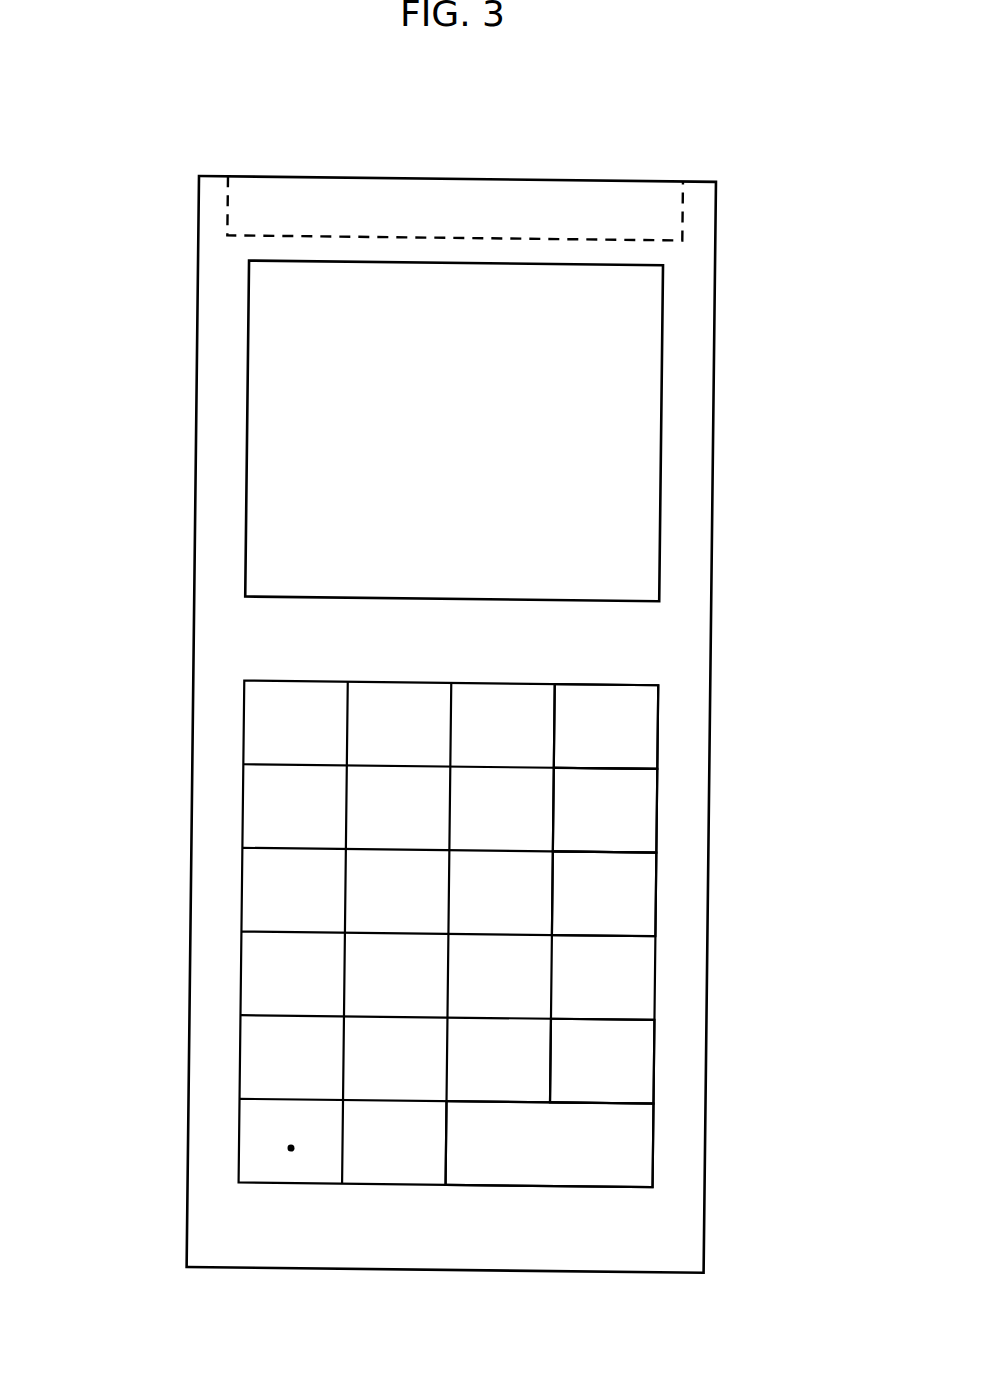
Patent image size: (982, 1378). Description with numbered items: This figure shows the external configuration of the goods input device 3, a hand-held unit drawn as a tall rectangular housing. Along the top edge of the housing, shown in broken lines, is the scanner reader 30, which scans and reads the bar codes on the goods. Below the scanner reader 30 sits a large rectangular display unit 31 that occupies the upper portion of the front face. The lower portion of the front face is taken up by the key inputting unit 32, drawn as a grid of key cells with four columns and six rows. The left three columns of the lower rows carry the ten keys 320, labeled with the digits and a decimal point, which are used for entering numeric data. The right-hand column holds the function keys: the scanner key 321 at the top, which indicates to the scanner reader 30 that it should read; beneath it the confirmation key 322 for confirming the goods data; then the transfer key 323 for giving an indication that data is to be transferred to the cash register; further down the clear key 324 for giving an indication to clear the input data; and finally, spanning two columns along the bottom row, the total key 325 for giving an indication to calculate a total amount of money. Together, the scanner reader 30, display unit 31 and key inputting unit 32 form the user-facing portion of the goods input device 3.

The goods input device 3 is at (683, 180).
The scanner reader 30 is at (680, 212).
The display unit 31 is at (642, 427).
The key inputting unit 32 is at (673, 655).
The ten keys 320 is at (240, 977).
The scanner key 321 is at (658, 733).
The confirmation key 322 is at (658, 818).
The transfer key 323 is at (657, 907).
The clear key 324 is at (655, 1062).
The total key 325 is at (652, 1155).